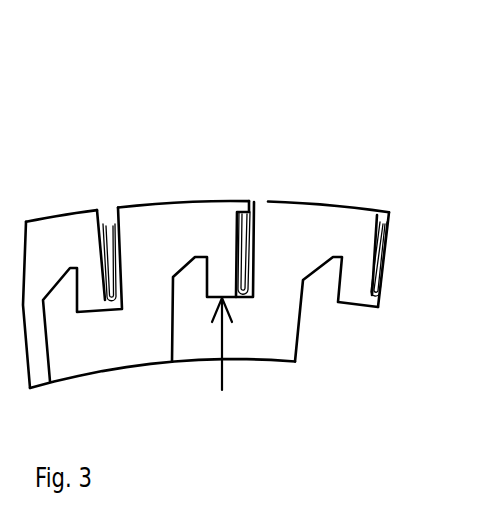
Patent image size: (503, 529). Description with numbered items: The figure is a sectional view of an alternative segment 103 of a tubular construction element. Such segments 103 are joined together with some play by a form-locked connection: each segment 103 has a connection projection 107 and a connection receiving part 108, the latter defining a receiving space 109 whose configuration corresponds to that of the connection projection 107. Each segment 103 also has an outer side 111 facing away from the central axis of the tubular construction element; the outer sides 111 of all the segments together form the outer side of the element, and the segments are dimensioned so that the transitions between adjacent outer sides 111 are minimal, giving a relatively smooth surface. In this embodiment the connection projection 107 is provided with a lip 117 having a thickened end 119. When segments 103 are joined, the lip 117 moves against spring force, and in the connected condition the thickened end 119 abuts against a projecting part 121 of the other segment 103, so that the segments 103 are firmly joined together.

The segment 103 is at (161, 214).
The connection projection 107 is at (355, 269).
The connection receiving part 108 is at (221, 362).
The receiving space 109 is at (256, 265).
The outer side 111 is at (204, 203).
The lip 117 is at (102, 224).
The thickened end 119 is at (384, 228).
The projecting part 121 is at (113, 222).